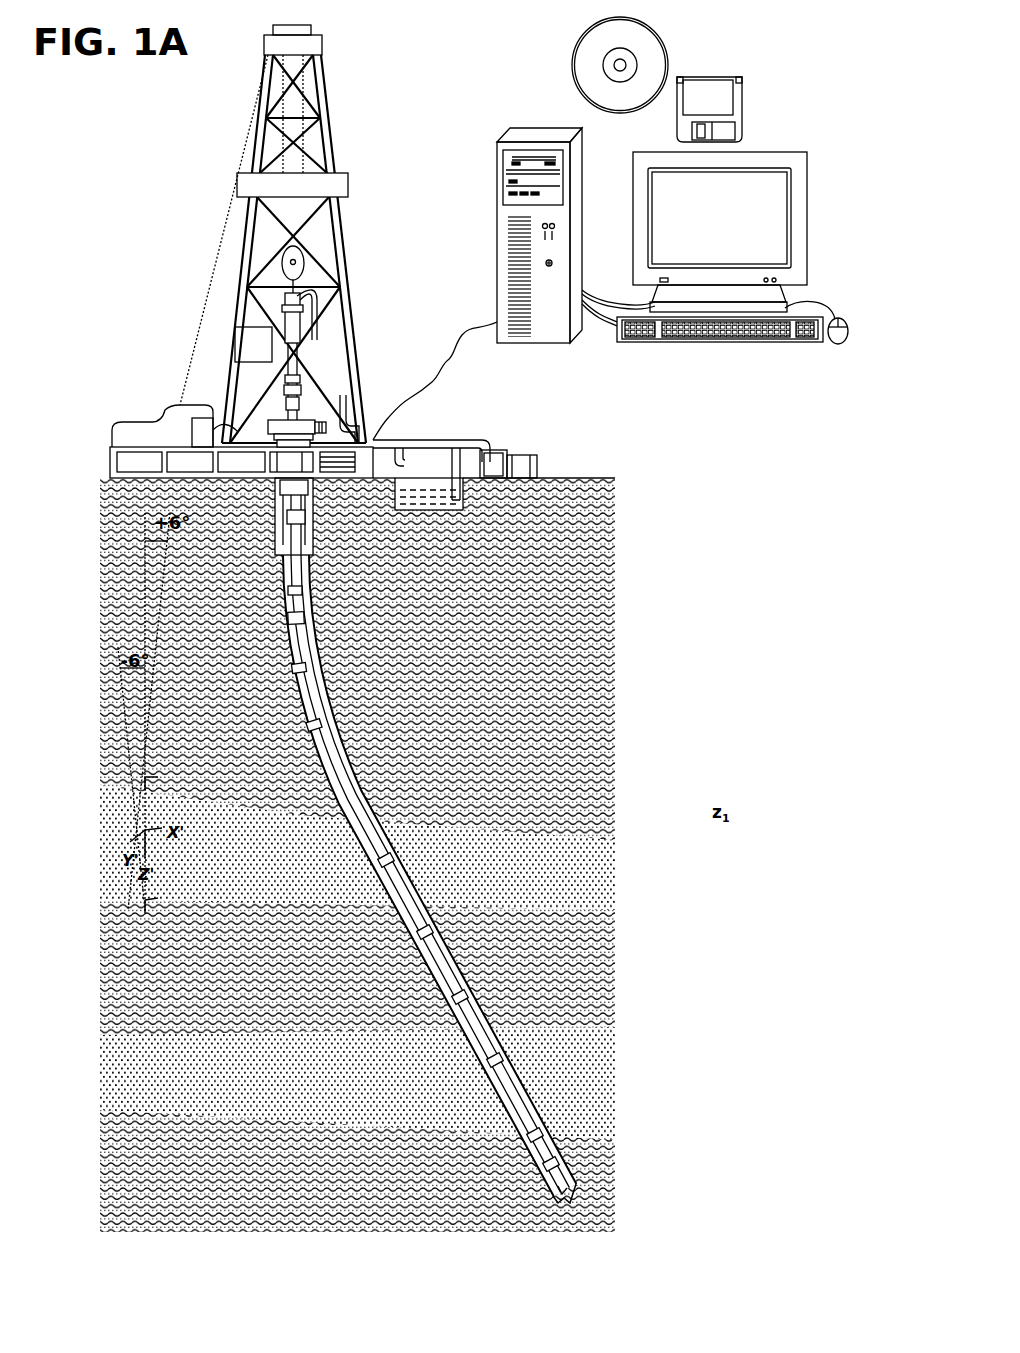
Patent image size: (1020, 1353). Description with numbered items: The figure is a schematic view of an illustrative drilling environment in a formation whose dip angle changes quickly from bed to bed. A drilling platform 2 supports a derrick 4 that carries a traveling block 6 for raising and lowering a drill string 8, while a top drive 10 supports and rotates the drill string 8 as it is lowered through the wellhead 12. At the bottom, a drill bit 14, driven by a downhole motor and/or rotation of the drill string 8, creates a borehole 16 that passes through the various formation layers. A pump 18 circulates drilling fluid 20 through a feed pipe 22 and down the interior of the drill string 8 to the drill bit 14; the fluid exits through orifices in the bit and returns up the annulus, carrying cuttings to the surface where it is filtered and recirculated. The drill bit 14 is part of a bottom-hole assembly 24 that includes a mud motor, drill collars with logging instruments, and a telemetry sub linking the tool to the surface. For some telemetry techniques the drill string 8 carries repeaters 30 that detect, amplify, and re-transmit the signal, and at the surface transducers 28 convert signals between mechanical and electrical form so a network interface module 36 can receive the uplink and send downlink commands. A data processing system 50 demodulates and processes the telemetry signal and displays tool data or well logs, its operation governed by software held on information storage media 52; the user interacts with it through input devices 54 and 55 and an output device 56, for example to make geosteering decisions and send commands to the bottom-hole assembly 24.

The drilling platform 2 is at (108, 450).
The derrick 4 is at (332, 145).
The traveling block 6 is at (304, 262).
The drill string 8 is at (305, 595).
The top drive 10 is at (293, 325).
The wellhead 12 is at (310, 422).
The drill bit 14 is at (570, 1178).
The borehole 16 is at (312, 605).
The pump 18 is at (492, 452).
The drilling fluid 20 is at (408, 502).
The feed pipe 22 is at (440, 438).
The bottom-hole assembly 24 is at (522, 1155).
The transducers 28 is at (297, 387).
The repeaters 30 is at (290, 620).
The network interface module 36 is at (208, 420).
The data processing system 50 is at (582, 258).
The information storage media 52 is at (668, 64).
The input device 54 is at (753, 342).
The input device 55 is at (836, 342).
The output device 56 is at (807, 248).